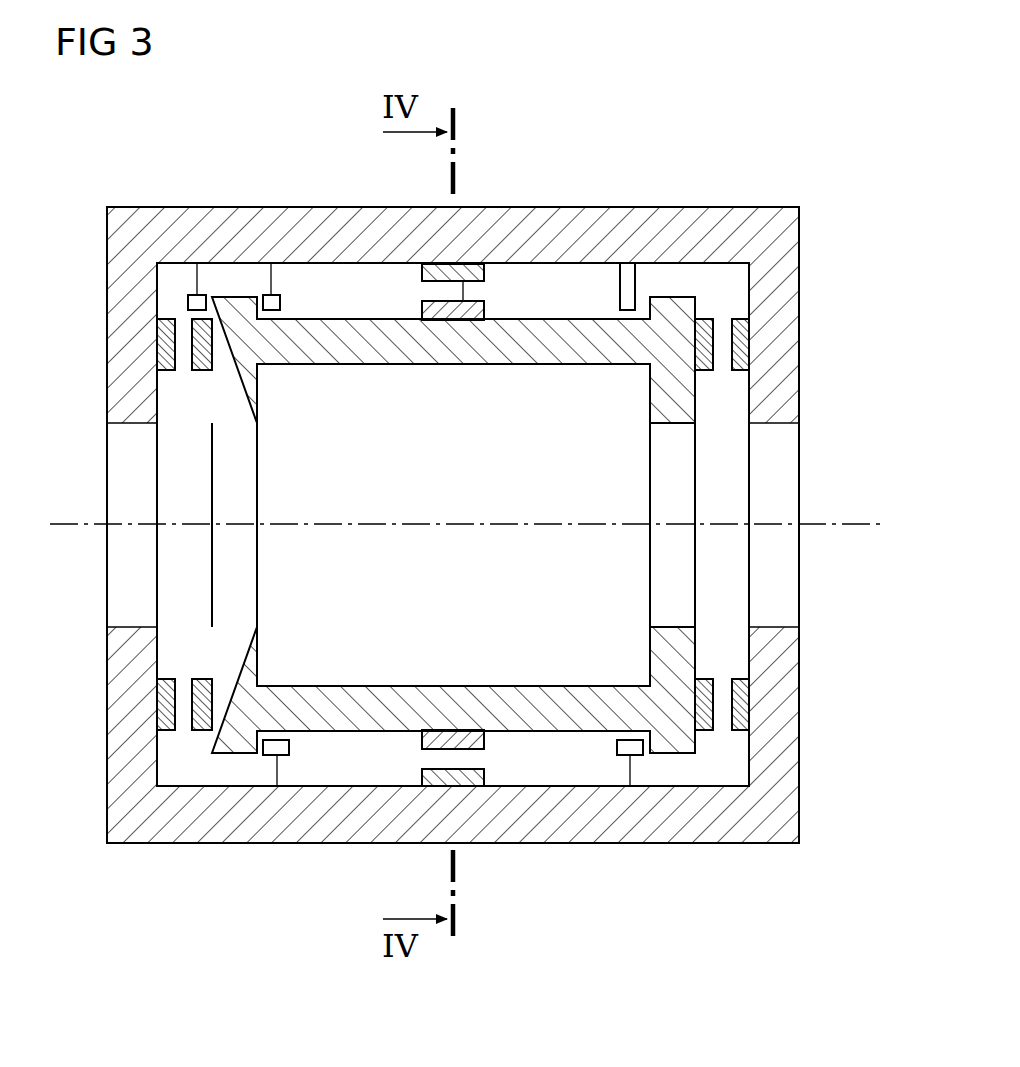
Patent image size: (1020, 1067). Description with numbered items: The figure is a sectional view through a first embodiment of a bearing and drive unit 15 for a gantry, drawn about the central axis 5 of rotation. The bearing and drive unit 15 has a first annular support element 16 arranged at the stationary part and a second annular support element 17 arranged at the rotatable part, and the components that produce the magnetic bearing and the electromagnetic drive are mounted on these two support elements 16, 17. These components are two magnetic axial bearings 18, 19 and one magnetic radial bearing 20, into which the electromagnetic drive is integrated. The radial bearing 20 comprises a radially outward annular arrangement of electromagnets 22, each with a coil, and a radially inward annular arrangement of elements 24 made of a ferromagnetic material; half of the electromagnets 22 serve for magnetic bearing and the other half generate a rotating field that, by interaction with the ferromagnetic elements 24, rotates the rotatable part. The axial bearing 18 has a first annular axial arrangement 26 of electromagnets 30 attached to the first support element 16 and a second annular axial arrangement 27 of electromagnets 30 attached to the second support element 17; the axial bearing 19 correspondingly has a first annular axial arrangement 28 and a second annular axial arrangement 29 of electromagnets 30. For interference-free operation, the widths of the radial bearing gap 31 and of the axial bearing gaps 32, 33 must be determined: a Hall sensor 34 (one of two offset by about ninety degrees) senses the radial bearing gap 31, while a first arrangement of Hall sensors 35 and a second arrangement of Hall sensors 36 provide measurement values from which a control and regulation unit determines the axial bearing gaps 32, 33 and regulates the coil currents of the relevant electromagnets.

The axis 5 is at (876, 523).
The bearing and drive unit 15 is at (658, 116).
The first annular support element 16 is at (792, 250).
The second annular support element 17 is at (563, 352).
The magnetic axial bearing 18 is at (180, 296).
The magnetic axial bearing 19 is at (736, 296).
The magnetic radial bearing 20 is at (460, 254).
The electromagnet 22 is at (445, 266).
The element made of a ferromagnetic material 24 is at (445, 312).
The first annular axial arrangement 26 is at (165, 380).
The second annular axial arrangement 27 is at (199, 380).
The first annular axial arrangement 28 is at (740, 380).
The second annular axial arrangement 29 is at (706, 380).
The electromagnet 30 is at (210, 335).
The radial bearing gap 31 is at (463, 292).
The axial bearing gap 32 is at (183, 330).
The axial bearing gap 33 is at (723, 718).
The Hall sensor 34 is at (626, 268).
The first arrangement of Hall sensors 35 is at (278, 757).
The second arrangement of Hall sensors 36 is at (196, 294).